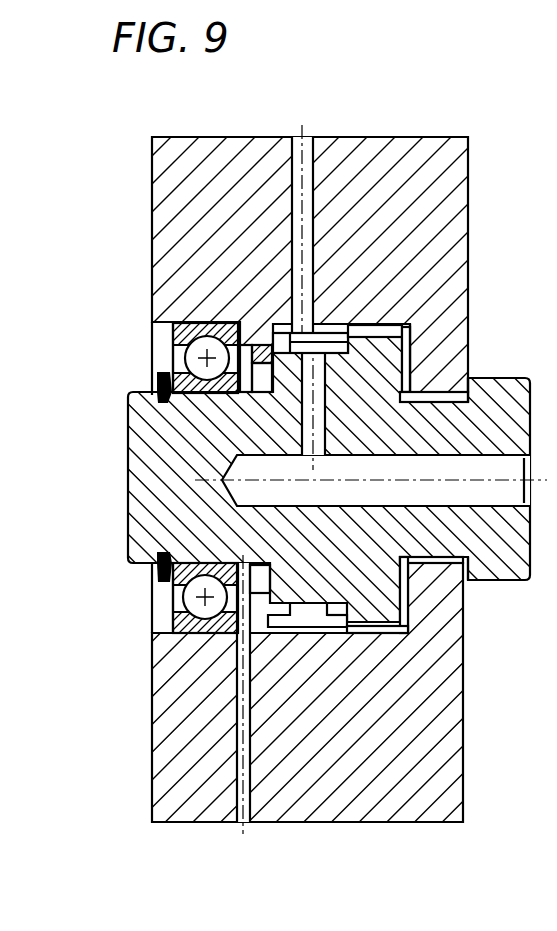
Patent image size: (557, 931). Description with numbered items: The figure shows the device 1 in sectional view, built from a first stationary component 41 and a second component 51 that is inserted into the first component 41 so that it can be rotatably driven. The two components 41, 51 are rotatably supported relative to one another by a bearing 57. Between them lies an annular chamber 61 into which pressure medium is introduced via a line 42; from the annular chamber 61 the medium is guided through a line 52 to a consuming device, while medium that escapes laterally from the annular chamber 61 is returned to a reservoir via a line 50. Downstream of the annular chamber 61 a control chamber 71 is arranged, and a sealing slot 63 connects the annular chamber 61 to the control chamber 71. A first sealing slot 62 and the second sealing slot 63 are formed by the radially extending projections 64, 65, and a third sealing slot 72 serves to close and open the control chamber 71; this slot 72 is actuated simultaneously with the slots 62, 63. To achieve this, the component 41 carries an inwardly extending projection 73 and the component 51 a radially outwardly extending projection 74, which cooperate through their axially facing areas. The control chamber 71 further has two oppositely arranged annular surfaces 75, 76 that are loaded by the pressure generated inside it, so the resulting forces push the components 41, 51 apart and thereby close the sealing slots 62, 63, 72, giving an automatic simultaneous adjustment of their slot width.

The device 1 is at (92, 768).
The first stationary component 41 is at (413, 145).
The line 42 is at (316, 172).
The line 50 is at (245, 758).
The second component 51 is at (128, 430).
The line 52 is at (248, 497).
The bearing 57 is at (165, 617).
The annular chamber 61 is at (308, 627).
The sealing slot 62 is at (258, 338).
The sealing slot 63 is at (352, 627).
The radially extending projection 64 is at (340, 627).
The radially extending projection 65 is at (277, 333).
The control chamber 71 is at (408, 327).
The sealing slot 72 is at (468, 590).
The inwardly extending projection 73 is at (455, 387).
The radially outwardly extending projection 74 is at (477, 573).
The annular surface 75 is at (428, 366).
The annular surface 76 is at (412, 330).